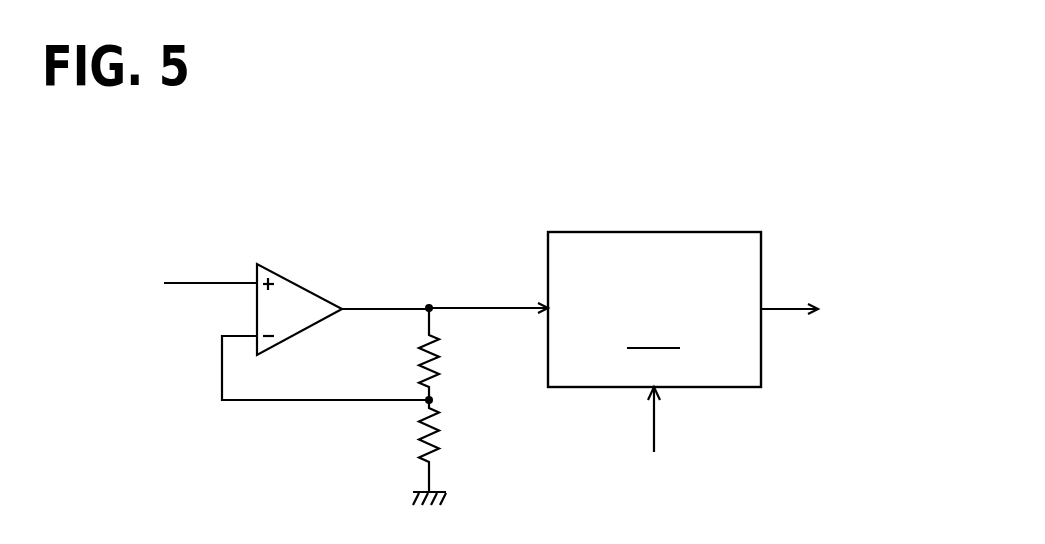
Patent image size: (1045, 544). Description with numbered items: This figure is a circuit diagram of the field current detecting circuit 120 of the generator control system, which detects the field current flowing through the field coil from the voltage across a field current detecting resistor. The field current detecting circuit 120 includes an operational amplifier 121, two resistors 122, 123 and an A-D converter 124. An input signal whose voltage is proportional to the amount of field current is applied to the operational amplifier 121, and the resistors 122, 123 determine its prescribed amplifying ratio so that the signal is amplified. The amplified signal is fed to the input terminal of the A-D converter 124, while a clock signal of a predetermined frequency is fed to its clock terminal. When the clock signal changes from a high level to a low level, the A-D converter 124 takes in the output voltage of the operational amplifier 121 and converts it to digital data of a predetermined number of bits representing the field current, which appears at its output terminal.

The field current detecting circuit 120 is at (482, 205).
The operational amplifier 121 is at (362, 262).
The resistor 122 is at (438, 363).
The resistor 123 is at (438, 443).
The A-D converter 124 is at (695, 232).